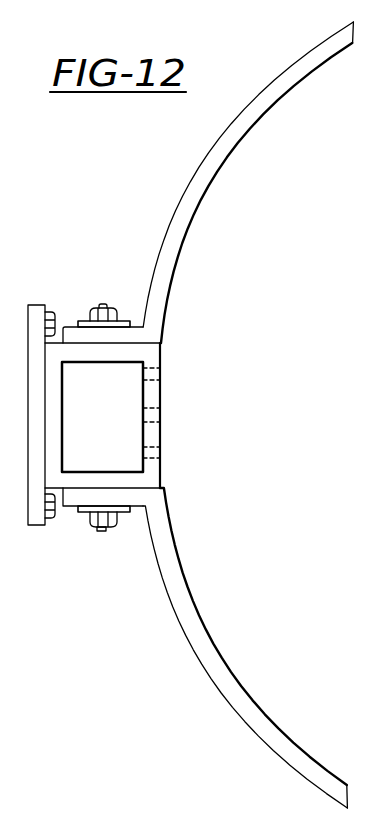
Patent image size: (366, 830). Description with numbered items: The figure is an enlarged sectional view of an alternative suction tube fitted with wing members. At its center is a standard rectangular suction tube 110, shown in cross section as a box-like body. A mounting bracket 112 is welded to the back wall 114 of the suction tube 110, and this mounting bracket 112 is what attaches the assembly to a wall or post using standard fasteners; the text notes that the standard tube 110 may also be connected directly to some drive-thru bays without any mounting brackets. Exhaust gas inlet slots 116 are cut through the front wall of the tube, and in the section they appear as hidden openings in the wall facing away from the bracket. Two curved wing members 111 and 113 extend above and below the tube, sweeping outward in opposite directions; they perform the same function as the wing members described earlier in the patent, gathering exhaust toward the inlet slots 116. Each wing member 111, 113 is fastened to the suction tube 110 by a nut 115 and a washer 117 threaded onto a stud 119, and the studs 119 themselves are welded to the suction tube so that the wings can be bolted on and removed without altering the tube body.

The suction tube 110 is at (161, 486).
The wing member 111 is at (230, 664).
The mounting bracket 112 is at (34, 305).
The wing member 113 is at (266, 120).
The back wall 114 is at (77, 343).
The nut 115 is at (98, 531).
The exhaust gas inlet slot 116 is at (161, 370).
The washer 117 is at (88, 519).
The stud 119 is at (104, 306).